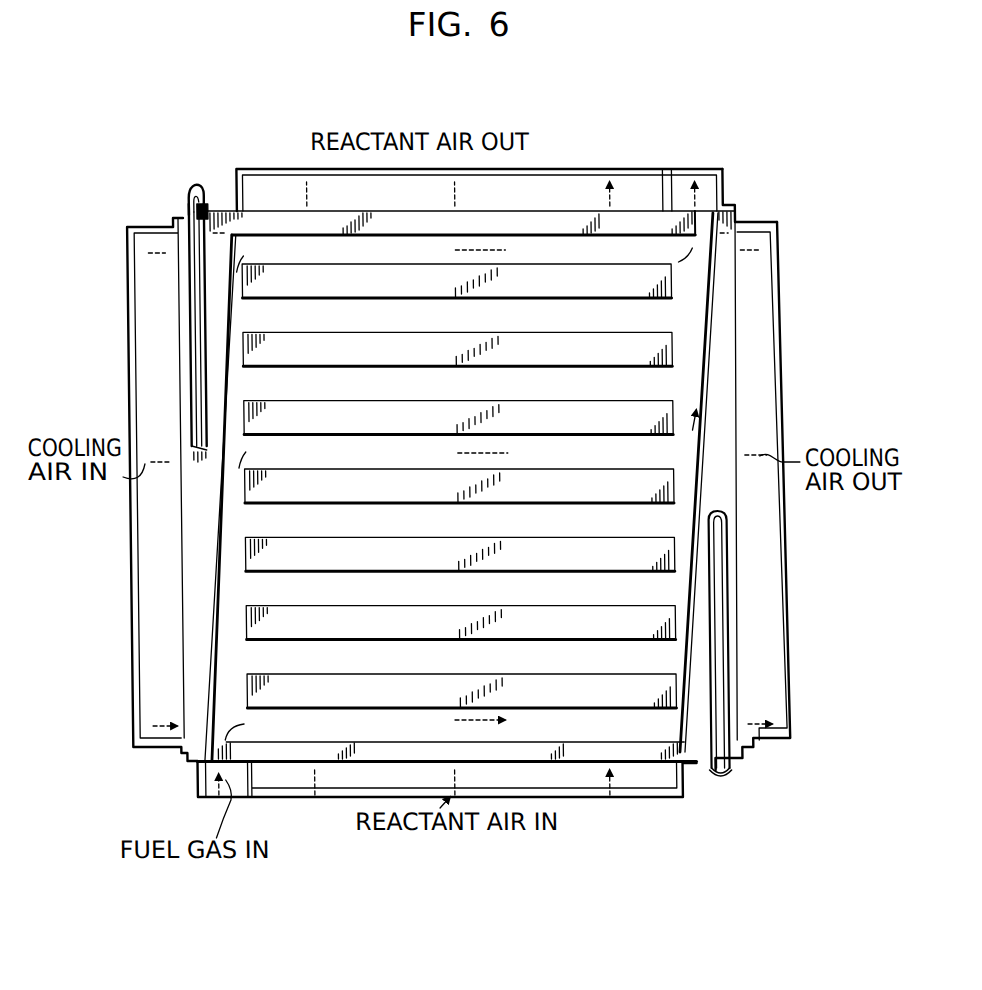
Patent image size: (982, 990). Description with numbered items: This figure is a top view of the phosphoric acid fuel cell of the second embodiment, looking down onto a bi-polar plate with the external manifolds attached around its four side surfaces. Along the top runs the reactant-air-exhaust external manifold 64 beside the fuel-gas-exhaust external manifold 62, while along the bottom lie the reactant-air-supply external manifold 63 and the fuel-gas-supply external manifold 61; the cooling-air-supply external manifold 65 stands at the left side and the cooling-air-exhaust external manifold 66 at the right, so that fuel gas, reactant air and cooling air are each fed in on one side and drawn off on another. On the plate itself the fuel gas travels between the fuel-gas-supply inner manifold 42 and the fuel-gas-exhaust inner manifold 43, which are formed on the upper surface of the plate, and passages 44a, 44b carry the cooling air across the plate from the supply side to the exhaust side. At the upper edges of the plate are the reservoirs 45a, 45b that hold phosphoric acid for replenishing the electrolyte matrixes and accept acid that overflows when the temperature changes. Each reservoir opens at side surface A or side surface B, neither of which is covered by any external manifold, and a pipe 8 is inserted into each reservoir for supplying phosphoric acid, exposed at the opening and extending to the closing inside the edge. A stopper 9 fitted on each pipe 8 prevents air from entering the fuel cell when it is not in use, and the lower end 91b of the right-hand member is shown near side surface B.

The pipe 8 is at (184, 190).
The stopper 9 is at (203, 204).
The side surface A is at (233, 210).
The side surface B is at (694, 767).
The fuel-gas-supply inner manifold 42 is at (226, 574).
The fuel-gas-exhaust inner manifold 43 is at (690, 352).
The cooling air inlet passage 44a is at (183, 496).
The cooling air outlet passage 44b is at (719, 483).
The reservoir 45a is at (186, 345).
The reservoir 45b is at (717, 642).
The fuel-gas-supply external manifold 61 is at (186, 803).
The fuel-gas-exhaust external manifold 62 is at (690, 176).
The reactant-air-supply external manifold 63 is at (335, 798).
The reactant-air-exhaust external manifold 64 is at (571, 172).
The cooling-air-supply external manifold 65 is at (141, 689).
The cooling-air-exhaust external manifold 66 is at (781, 574).
The lower end of tie member 91b is at (730, 773).